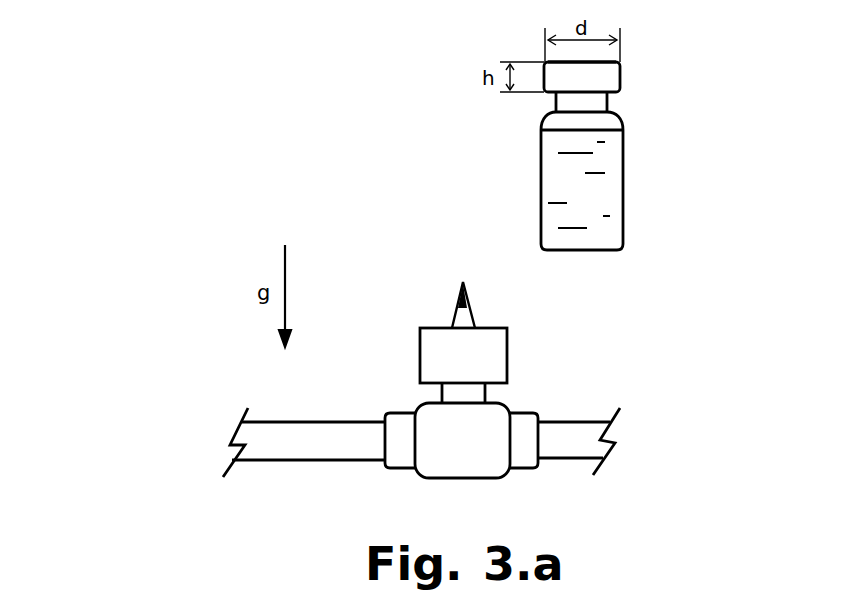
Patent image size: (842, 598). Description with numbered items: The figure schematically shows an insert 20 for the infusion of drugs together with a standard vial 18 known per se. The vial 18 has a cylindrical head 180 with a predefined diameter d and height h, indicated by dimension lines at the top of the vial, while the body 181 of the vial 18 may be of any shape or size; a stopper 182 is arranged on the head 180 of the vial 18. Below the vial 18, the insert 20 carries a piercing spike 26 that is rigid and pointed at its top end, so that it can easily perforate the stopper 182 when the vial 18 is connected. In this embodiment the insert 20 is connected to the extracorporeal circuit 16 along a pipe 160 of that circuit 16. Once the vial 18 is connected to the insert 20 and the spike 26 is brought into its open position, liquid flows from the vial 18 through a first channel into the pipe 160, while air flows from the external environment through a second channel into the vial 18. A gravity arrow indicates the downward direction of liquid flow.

The extracorporeal circuit 16 is at (329, 465).
The pipe 160 is at (570, 432).
The vial 18 is at (597, 146).
The cylindrical head 180 is at (613, 79).
The body 181 is at (625, 198).
The stopper 182 is at (600, 63).
The insert 20 is at (411, 357).
The piercing spike 26 is at (467, 310).